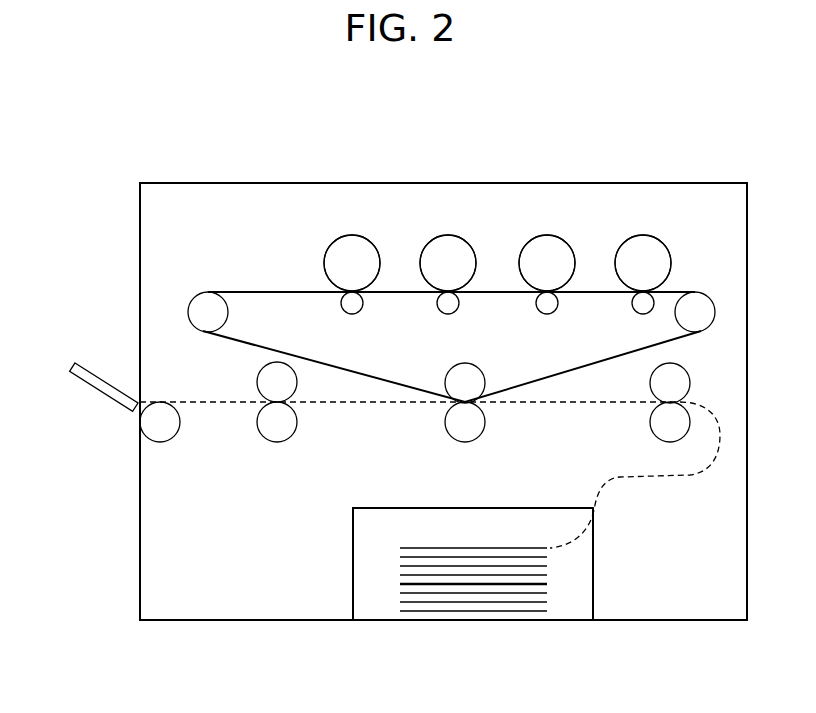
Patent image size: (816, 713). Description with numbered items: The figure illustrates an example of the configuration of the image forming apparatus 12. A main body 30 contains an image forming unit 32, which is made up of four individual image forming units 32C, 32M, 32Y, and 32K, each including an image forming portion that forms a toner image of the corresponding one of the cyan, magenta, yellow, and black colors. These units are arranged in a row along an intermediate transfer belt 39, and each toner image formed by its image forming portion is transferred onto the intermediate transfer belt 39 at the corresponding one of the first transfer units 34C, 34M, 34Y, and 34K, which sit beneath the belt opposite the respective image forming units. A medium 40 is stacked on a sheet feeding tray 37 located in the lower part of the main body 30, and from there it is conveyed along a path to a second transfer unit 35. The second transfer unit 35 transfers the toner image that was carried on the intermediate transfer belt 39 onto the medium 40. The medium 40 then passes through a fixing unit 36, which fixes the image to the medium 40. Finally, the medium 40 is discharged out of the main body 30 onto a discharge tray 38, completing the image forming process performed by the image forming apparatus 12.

The image forming apparatus 12 is at (640, 110).
The main body 30 is at (153, 183).
The image forming unit 32 is at (620, 202).
The image forming unit 32C is at (325, 256).
The image forming unit 32M is at (422, 256).
The image forming unit 32Y is at (520, 256).
The image forming unit 32K is at (616, 256).
The first transfer unit 34C is at (359, 313).
The first transfer unit 34M is at (455, 313).
The first transfer unit 34Y is at (554, 313).
The first transfer unit 34K is at (640, 314).
The intermediate transfer belt 39 is at (244, 345).
The second transfer unit 35 is at (486, 385).
The fixing unit 36 is at (298, 388).
The discharge tray 38 is at (80, 376).
The sheet feeding tray 37 is at (378, 603).
The medium 40 is at (460, 548).